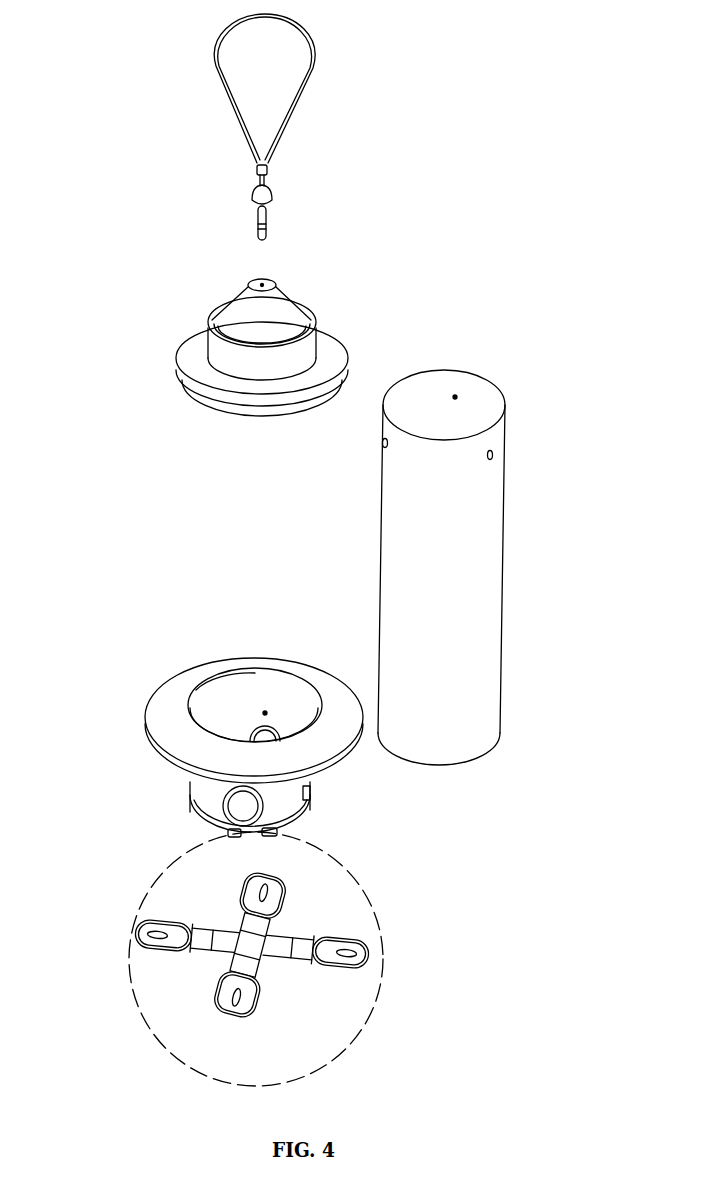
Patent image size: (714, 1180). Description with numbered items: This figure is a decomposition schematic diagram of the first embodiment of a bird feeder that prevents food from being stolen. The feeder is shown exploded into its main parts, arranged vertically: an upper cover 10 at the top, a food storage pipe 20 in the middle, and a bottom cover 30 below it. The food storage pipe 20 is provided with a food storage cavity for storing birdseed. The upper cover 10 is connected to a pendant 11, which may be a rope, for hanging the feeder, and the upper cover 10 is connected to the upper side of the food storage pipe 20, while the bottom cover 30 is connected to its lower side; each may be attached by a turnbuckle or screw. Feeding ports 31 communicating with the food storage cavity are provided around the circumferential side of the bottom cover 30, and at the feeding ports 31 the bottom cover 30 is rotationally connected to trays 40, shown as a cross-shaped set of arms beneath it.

The upper cover 10 is at (220, 355).
The pendant 11 is at (273, 157).
The food storage pipe 20 is at (411, 570).
The bottom cover 30 is at (211, 731).
The feeding ports 31 is at (257, 806).
The trays 40 is at (250, 906).